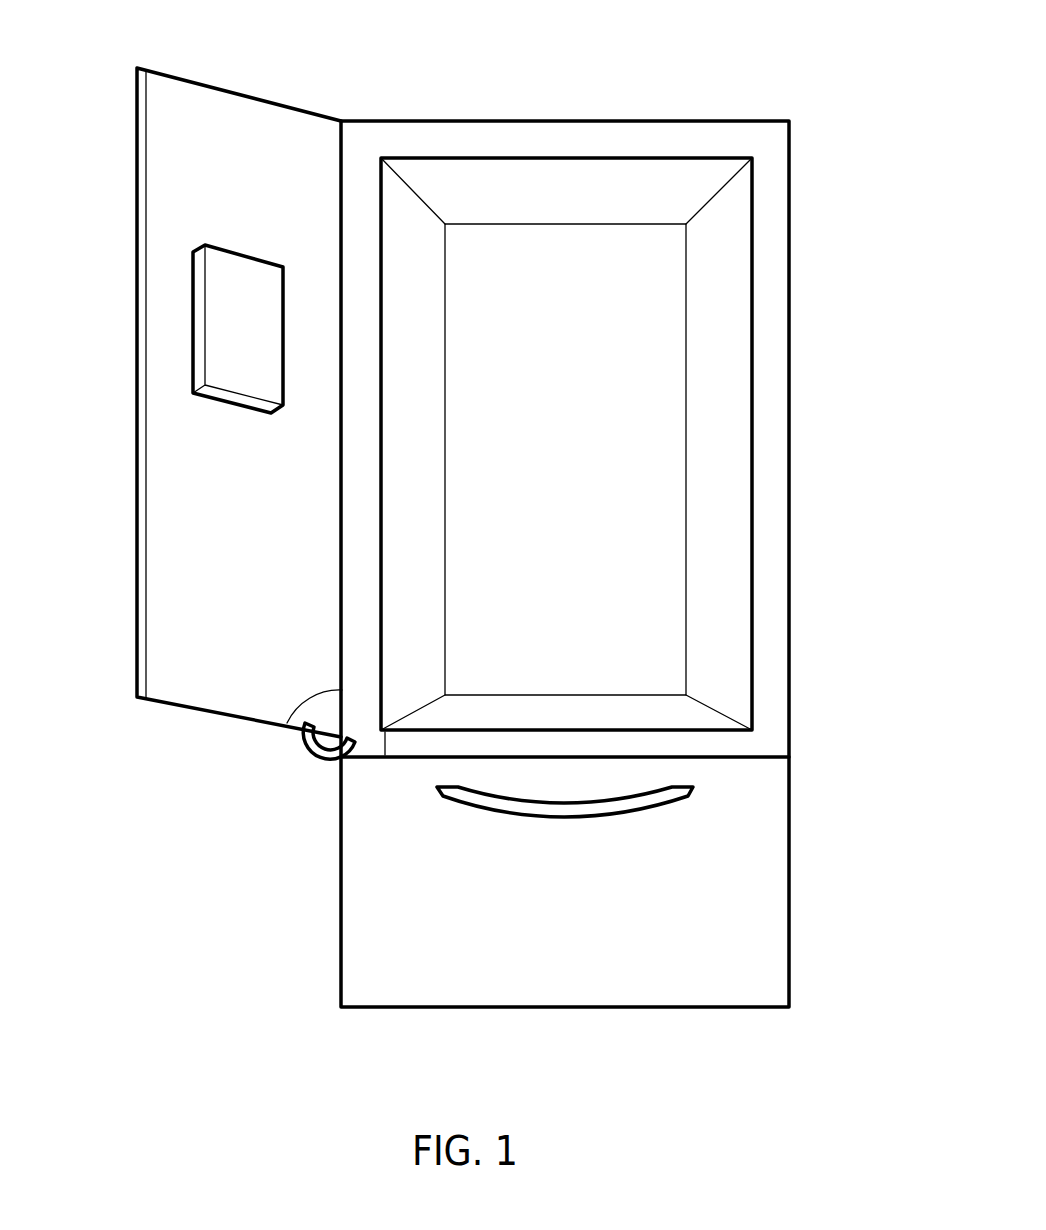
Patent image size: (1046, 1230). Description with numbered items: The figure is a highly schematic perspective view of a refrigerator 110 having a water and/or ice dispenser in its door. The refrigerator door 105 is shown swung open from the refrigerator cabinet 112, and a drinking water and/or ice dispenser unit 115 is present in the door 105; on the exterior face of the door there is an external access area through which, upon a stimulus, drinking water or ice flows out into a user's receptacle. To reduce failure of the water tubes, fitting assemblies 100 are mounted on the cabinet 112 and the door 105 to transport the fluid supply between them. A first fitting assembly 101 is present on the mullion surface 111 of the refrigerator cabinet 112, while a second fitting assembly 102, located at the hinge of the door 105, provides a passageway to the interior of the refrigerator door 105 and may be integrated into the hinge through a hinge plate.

The fitting assembly 100 is at (308, 750).
The first fitting assembly 101 is at (372, 750).
The second fitting assembly 102 is at (310, 700).
The refrigerator door 105 is at (194, 402).
The refrigerator 110 is at (464, 511).
The mullion surface 111 is at (708, 748).
The refrigerator cabinet 112 is at (790, 282).
The drinking water and/or ice dispenser unit 115 is at (235, 248).